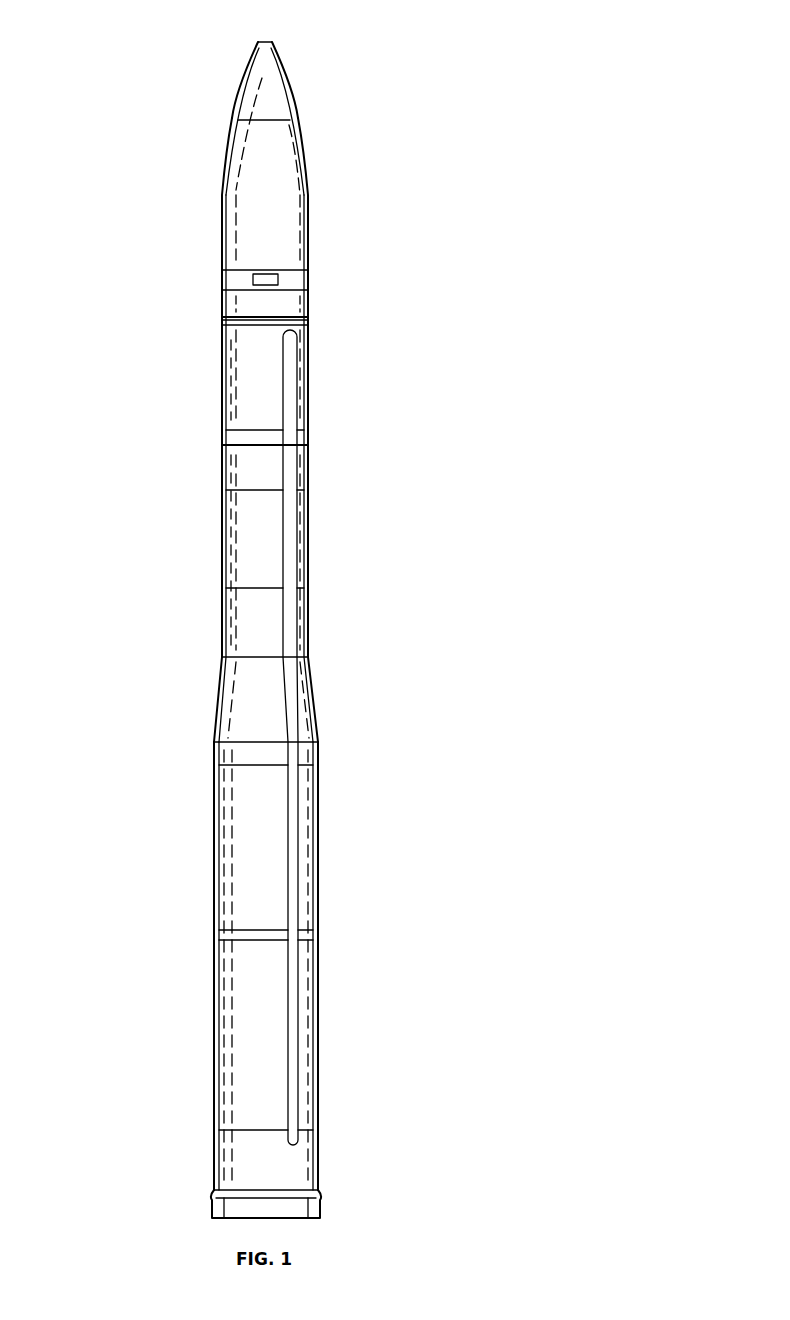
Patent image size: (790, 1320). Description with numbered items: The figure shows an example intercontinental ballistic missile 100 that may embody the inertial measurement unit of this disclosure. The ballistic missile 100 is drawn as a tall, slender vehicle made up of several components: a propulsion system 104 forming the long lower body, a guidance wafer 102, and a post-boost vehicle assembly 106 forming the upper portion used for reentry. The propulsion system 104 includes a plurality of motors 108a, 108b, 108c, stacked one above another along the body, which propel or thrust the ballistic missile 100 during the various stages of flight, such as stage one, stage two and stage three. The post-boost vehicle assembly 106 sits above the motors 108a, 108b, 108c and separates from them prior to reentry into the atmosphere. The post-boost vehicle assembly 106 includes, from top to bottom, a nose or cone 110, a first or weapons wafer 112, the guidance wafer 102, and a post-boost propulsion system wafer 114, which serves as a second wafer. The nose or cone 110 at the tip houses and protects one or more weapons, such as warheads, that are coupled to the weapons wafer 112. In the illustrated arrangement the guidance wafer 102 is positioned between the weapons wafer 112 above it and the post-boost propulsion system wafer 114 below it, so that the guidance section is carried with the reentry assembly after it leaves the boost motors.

The ballistic missile 100 is at (418, 38).
The guidance wafer 102 is at (310, 282).
The propulsion system 104 is at (166, 590).
The post-boost vehicle assembly 106 is at (166, 232).
The motor 108a is at (318, 974).
The motor 108b is at (311, 541).
The motor 108c is at (311, 364).
The nose or cone 110 is at (289, 82).
The weapons wafer 112 is at (303, 147).
The post-boost propulsion system wafer 114 is at (222, 306).